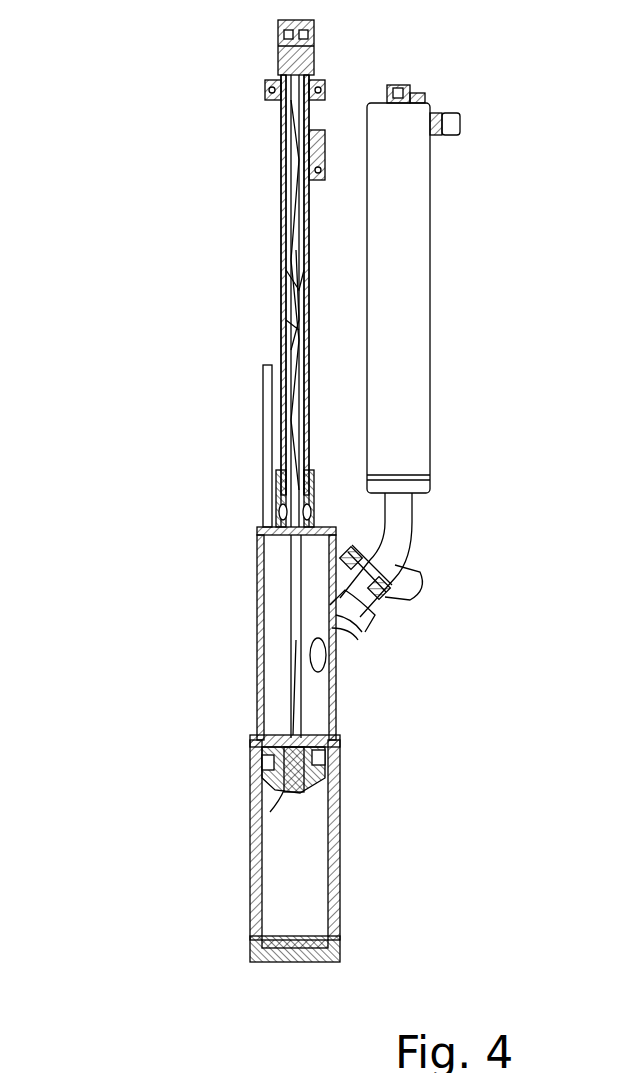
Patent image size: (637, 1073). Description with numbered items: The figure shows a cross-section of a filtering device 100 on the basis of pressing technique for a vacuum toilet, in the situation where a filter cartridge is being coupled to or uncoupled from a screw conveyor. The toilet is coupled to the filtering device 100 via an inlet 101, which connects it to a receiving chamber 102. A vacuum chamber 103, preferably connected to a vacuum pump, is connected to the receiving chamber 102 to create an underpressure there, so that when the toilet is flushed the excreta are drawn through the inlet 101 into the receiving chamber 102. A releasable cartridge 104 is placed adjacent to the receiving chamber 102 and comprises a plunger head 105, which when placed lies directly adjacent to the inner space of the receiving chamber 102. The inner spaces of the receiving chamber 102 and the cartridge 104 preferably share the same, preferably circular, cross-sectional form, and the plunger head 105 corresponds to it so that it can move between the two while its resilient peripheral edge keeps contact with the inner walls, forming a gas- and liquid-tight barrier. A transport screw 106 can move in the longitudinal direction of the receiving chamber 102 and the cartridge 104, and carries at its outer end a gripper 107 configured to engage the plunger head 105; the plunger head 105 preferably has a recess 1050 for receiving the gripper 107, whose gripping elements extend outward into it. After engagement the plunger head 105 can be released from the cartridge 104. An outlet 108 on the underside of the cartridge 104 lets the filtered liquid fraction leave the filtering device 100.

The filtering device 100 is at (125, 275).
The inlet 101 is at (425, 590).
The receiving chamber 102 is at (320, 700).
The vacuum chamber 103 is at (418, 275).
The releasable cartridge 104 is at (275, 922).
The plunger head 105 is at (270, 813).
The transport screw 106 is at (290, 638).
The gripper 107 is at (268, 742).
The outlet 108 is at (296, 963).
The recess 1050 is at (270, 768).